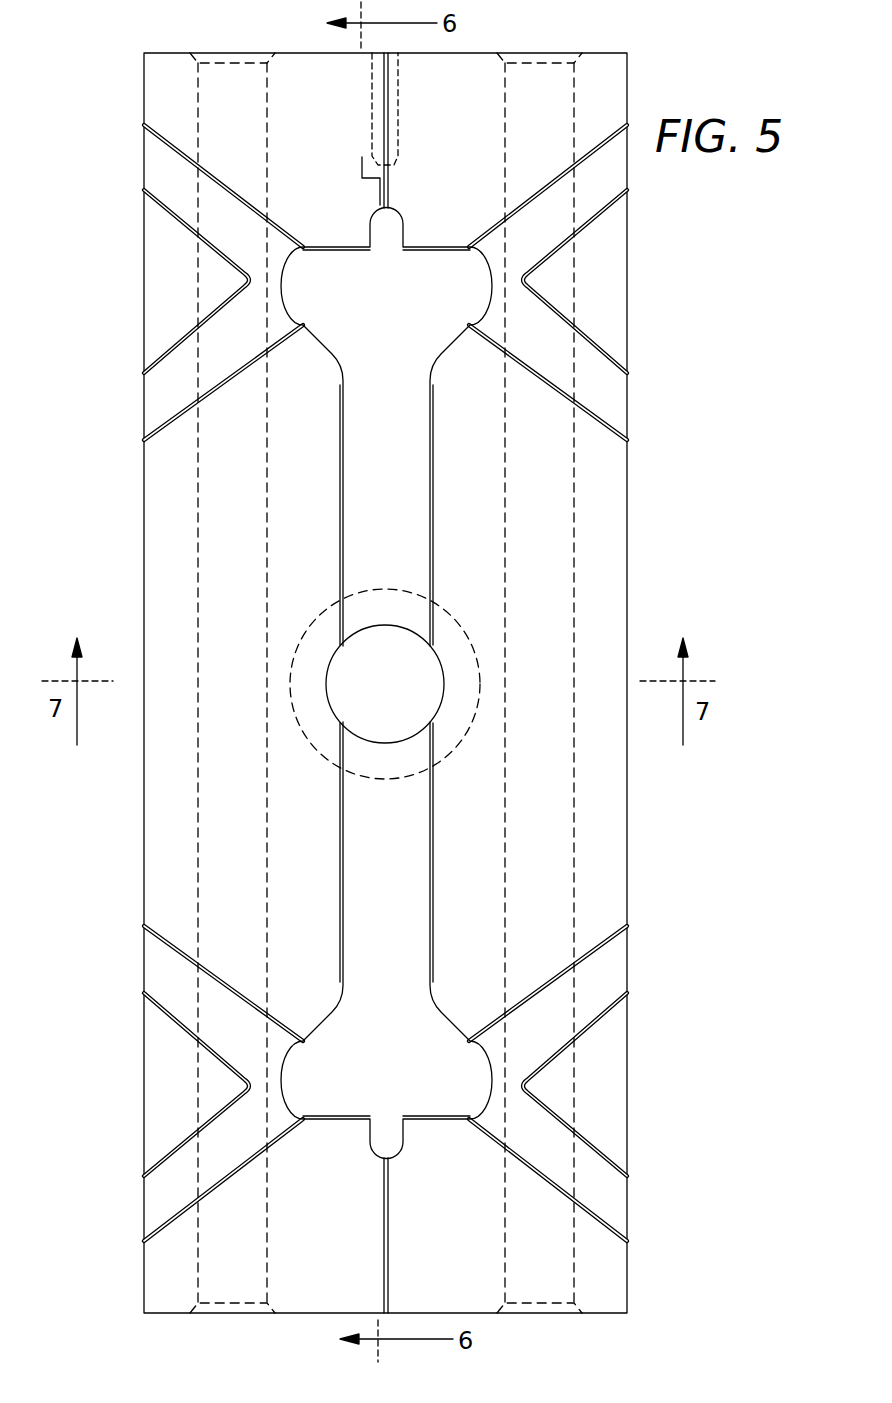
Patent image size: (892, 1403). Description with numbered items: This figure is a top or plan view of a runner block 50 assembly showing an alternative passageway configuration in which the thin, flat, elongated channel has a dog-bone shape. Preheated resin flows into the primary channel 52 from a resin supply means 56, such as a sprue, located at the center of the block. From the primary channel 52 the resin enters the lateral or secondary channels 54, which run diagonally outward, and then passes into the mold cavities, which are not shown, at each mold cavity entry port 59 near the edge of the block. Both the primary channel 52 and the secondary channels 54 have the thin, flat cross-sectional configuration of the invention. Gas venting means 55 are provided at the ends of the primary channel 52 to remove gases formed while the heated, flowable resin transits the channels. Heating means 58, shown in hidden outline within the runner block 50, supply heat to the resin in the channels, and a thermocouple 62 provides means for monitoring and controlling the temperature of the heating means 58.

The runner block 50 is at (630, 598).
The primary channel 52 is at (415, 462).
The lateral or secondary channels 54 is at (622, 168).
The gas venting means 55 is at (389, 186).
The resin supply means 56 is at (430, 708).
The heating means 58 is at (268, 520).
The mold cavity entry port 59 is at (146, 962).
The thermocouple 62 is at (398, 112).